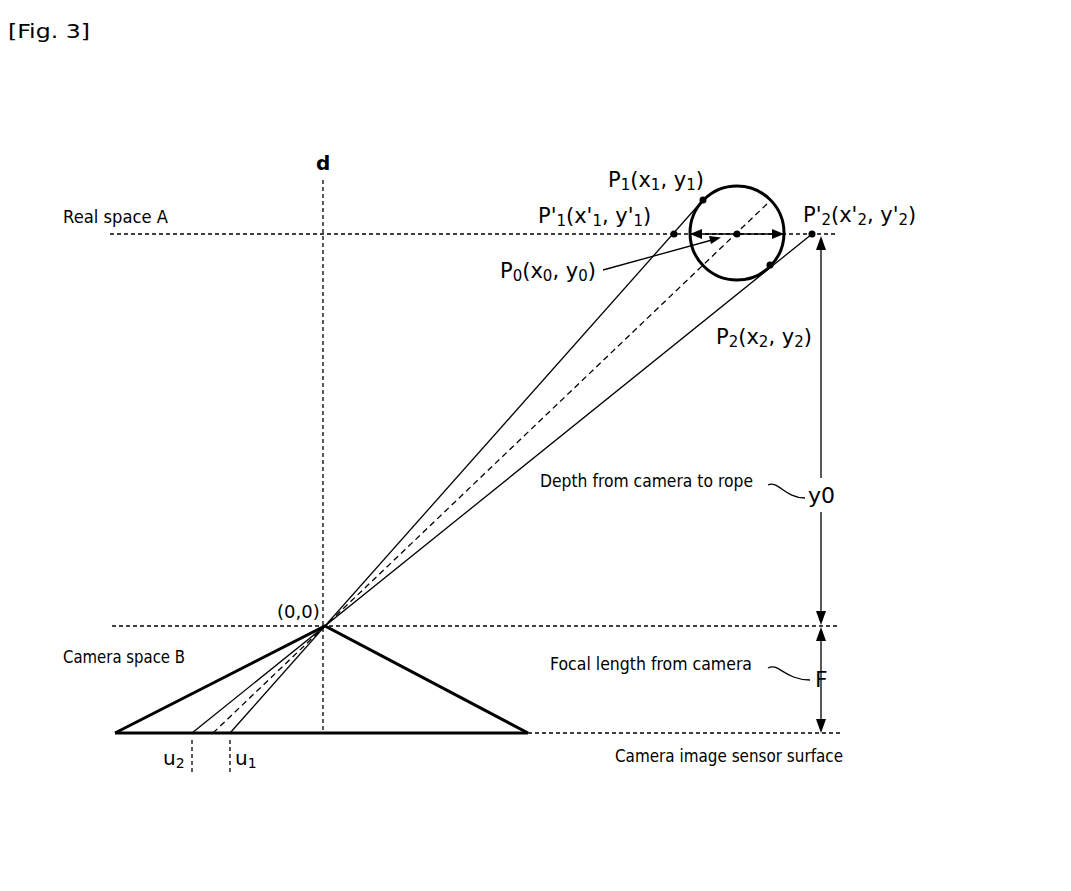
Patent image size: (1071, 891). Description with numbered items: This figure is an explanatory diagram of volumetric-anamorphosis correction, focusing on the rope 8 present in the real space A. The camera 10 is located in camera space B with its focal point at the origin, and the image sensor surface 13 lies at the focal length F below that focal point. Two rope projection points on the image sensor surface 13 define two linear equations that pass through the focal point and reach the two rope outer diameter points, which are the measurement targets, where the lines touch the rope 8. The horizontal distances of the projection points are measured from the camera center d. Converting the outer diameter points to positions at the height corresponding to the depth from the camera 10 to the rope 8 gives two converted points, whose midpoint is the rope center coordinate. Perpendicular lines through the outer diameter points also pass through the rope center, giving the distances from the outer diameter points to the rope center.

The rope 8 is at (742, 199).
The camera 10 is at (245, 636).
The image sensor surface 13 is at (503, 737).